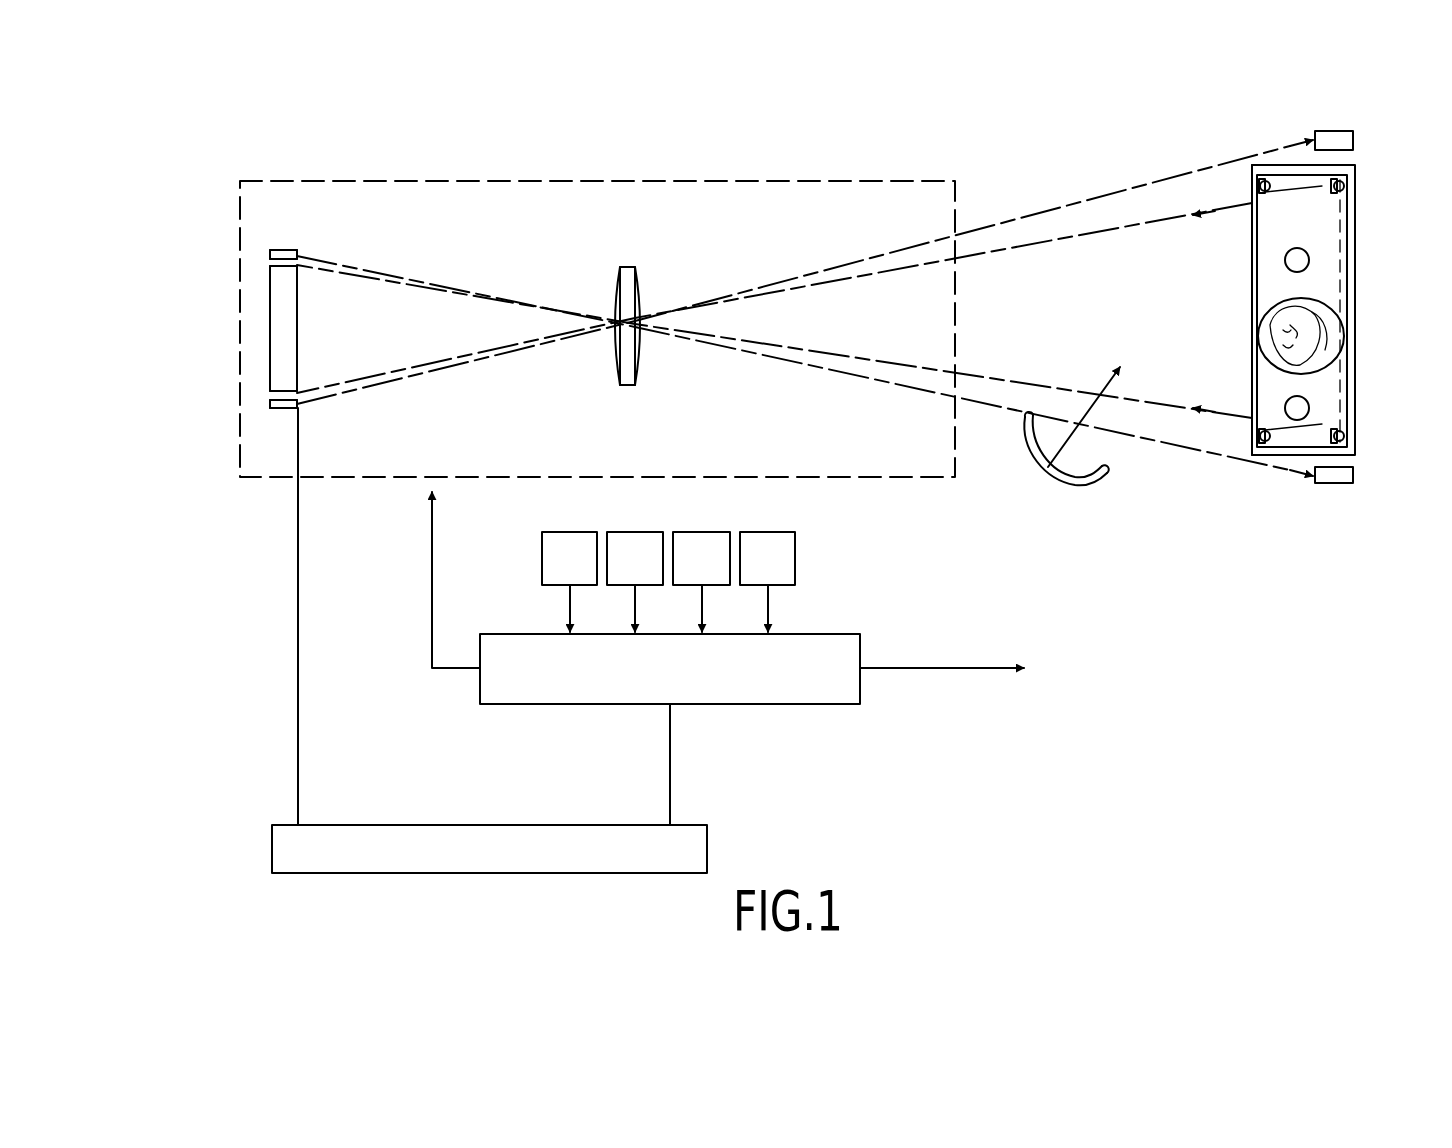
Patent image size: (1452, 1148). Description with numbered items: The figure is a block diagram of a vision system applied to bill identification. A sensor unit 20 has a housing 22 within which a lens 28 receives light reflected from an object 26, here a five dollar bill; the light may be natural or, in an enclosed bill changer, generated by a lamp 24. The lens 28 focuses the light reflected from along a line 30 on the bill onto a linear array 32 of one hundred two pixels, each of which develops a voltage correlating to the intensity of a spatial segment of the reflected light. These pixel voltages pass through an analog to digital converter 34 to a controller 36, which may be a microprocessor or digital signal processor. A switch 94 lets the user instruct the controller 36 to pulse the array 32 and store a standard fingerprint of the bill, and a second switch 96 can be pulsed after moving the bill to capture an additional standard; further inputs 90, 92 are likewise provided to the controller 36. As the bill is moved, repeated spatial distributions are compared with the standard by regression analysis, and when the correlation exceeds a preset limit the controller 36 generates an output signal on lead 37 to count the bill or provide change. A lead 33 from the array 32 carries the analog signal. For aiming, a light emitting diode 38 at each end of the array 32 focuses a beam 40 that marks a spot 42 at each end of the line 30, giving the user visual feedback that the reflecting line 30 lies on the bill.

The sensor unit 20 is at (304, 230).
The housing 22 is at (240, 408).
The lamp 24 is at (1063, 488).
The object 26 is at (1252, 213).
The lens 28 is at (622, 267).
The line 30 is at (1342, 393).
The linear array 32 is at (280, 313).
The lead 33 is at (298, 665).
The analog to digital converter 34 is at (272, 850).
The controller 36 is at (803, 704).
The lead 37 is at (888, 668).
The light emitting diode 38 is at (287, 250).
The beam 40 is at (1040, 213).
The spot 42 is at (1327, 131).
The memory module 90 is at (586, 575).
The memory module 92 is at (651, 575).
The switch 94 is at (718, 575).
The second switch 96 is at (784, 575).